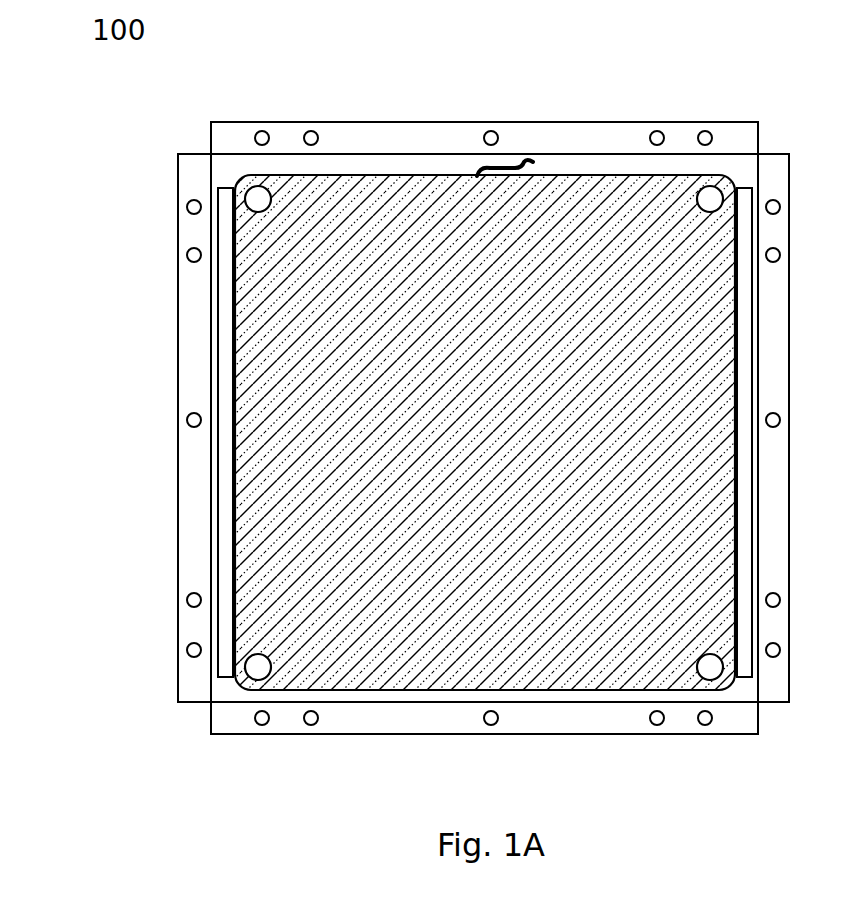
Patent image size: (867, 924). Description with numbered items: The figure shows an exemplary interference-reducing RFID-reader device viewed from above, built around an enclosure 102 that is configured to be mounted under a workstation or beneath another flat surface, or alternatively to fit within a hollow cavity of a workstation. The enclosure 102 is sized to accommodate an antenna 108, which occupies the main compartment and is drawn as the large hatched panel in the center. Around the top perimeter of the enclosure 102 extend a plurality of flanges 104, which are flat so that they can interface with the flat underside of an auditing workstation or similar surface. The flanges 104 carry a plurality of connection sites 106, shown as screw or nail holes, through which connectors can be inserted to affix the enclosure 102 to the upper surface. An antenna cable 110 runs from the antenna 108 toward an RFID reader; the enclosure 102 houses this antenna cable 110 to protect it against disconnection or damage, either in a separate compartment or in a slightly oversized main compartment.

The enclosure 102 is at (217, 330).
The flanges 104 is at (213, 143).
The connection sites 106 is at (186, 207).
The antenna 108 is at (292, 382).
The antenna cable 110 is at (510, 165).